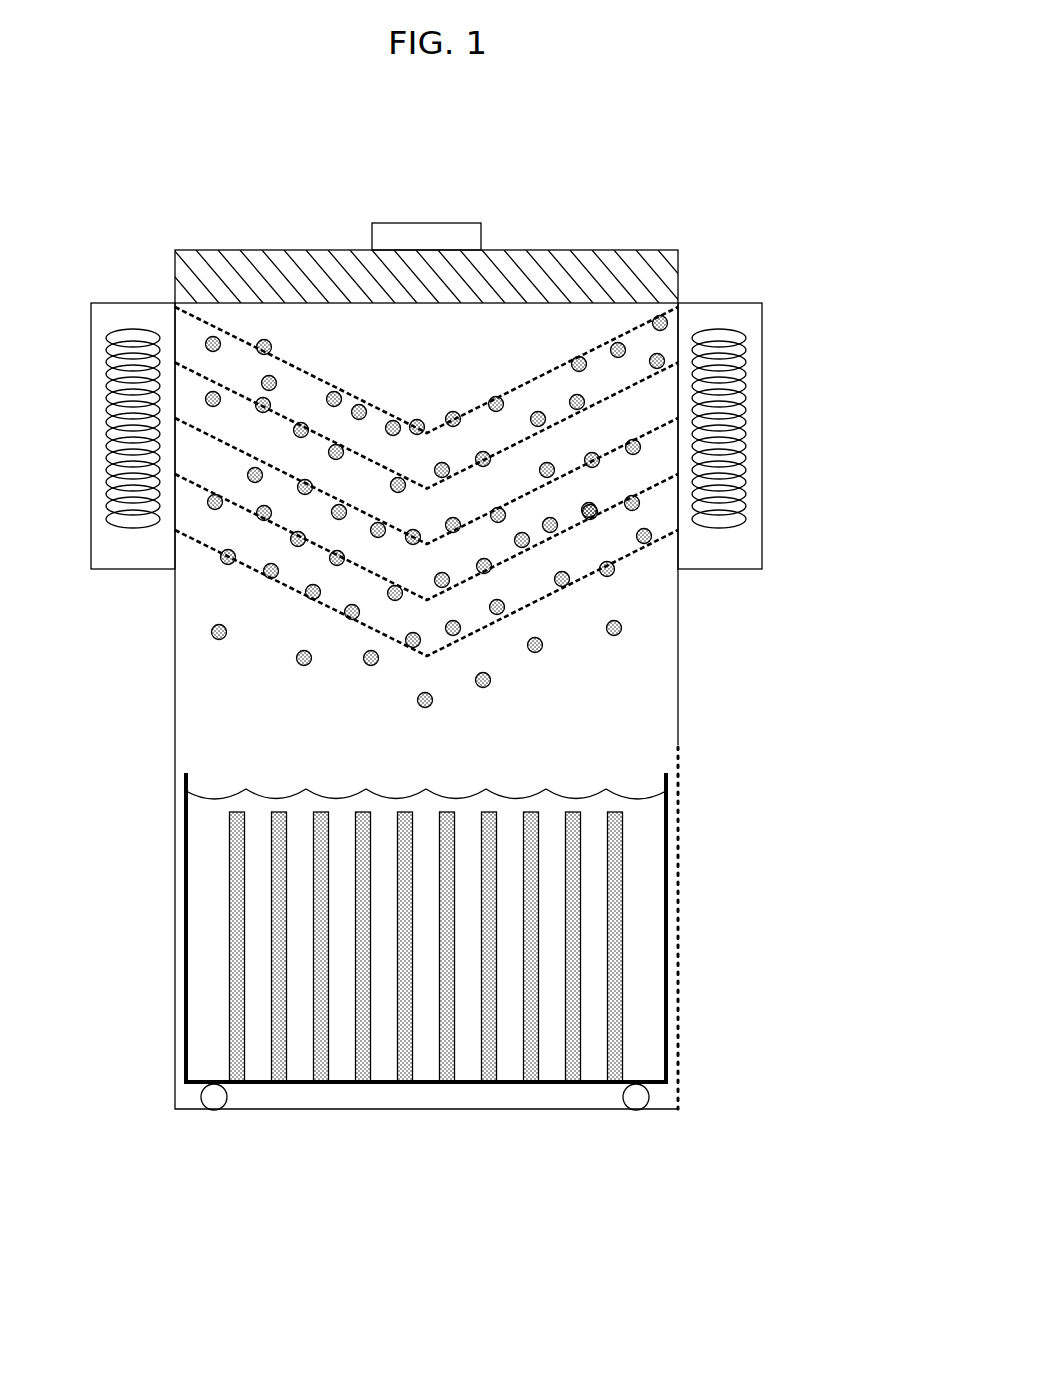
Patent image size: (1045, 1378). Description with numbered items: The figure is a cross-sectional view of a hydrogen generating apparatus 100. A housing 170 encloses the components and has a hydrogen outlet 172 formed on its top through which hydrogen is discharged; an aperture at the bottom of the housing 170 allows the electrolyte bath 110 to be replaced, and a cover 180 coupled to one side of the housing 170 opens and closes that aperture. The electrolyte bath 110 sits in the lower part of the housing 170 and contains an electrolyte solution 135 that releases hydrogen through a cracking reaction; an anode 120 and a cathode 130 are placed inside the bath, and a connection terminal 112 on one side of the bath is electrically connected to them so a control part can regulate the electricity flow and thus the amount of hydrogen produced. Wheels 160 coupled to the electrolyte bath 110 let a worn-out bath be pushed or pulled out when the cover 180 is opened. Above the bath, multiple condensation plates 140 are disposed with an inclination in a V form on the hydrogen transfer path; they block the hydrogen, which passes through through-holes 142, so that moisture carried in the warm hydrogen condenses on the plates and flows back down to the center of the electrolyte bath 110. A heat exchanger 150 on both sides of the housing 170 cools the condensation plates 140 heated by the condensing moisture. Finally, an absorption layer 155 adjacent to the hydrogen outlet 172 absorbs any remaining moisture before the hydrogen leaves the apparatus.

The hydrogen generating apparatus 100 is at (820, 163).
The electrolyte bath 110 is at (186, 777).
The connection terminal 112 is at (330, 992).
The anode 120 is at (237, 1082).
The cathode 130 is at (277, 1082).
The electrolyte solution 135 is at (640, 905).
The condensation plate 140 is at (599, 343).
The through-hole 142 is at (640, 325).
The heat exchanger 150 is at (762, 325).
The absorption layer 155 is at (665, 272).
The wheel 160 is at (636, 1110).
The housing 170 is at (678, 665).
The hydrogen outlet 172 is at (426, 222).
The cover 180 is at (678, 972).